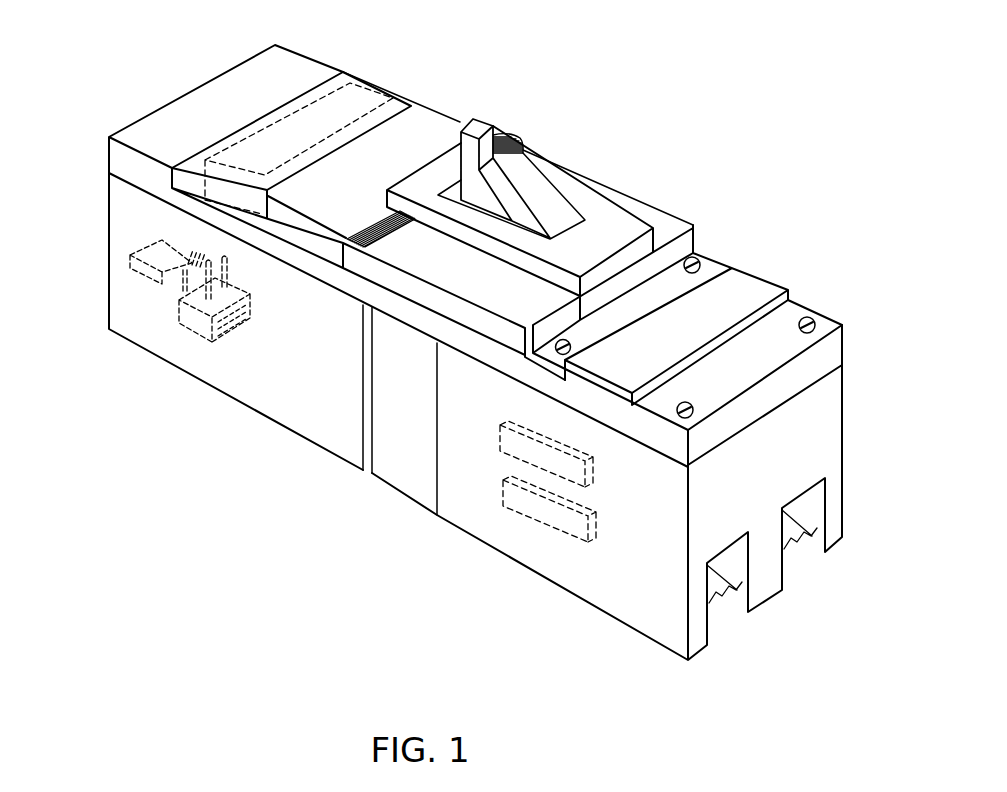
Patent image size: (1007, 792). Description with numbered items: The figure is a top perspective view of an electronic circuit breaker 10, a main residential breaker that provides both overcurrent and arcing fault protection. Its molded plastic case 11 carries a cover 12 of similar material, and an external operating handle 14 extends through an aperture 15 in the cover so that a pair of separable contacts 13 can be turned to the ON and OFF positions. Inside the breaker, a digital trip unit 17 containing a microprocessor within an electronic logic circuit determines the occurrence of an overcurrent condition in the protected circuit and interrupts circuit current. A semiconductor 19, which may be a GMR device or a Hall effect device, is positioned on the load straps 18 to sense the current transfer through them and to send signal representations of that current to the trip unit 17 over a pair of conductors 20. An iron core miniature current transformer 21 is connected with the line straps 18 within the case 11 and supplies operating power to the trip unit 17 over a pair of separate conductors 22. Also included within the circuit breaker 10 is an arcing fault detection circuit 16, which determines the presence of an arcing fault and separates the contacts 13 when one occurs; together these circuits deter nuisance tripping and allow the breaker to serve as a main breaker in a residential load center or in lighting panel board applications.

The electronic circuit breaker 10 is at (247, 583).
The molded plastic case 11 is at (843, 408).
The cover 12 is at (712, 262).
The separable contacts 13 is at (608, 511).
The external operating handle 14 is at (488, 124).
The aperture 15 is at (555, 207).
The arcing fault detection circuit 16 is at (272, 127).
The digital trip unit 17 is at (354, 94).
The load straps 18 is at (130, 271).
The semiconductor 19 is at (168, 297).
The pair of conductors 20 is at (191, 260).
The iron core miniature current transformer 21 is at (228, 326).
The pair of separate conductors 22 is at (232, 262).